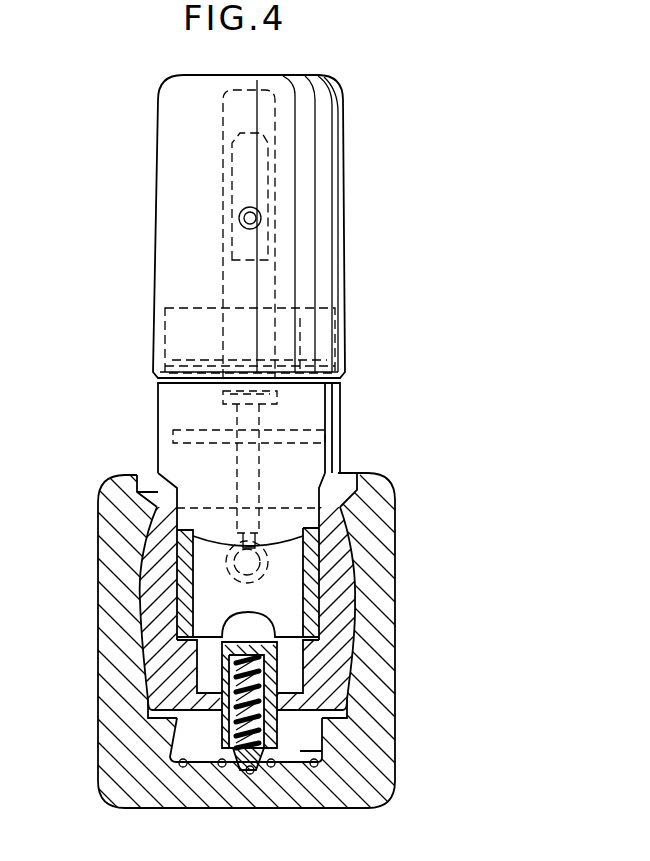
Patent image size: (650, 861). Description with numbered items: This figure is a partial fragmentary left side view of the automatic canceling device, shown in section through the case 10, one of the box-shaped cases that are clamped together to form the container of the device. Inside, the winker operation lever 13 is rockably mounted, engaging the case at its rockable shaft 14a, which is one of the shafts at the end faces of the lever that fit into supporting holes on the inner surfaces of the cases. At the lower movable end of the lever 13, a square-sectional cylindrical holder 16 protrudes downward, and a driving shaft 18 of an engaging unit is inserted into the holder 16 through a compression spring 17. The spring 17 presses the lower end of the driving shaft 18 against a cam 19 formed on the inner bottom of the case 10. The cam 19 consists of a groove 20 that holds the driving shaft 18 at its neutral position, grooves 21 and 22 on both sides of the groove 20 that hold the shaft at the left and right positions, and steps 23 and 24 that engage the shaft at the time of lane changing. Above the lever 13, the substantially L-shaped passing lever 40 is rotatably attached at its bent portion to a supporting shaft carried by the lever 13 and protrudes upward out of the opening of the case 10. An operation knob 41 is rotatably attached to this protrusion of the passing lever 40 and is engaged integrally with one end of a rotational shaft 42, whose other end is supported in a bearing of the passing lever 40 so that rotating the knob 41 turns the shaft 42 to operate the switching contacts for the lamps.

The case 10 is at (396, 678).
The winker operation lever 13 is at (353, 632).
The rockable shaft 14a is at (270, 566).
The square-sectional cylindrical holder 16 is at (222, 735).
The compression spring 17 is at (225, 668).
The driving shaft 18 is at (280, 749).
The cam 19 is at (308, 752).
The groove 20 is at (250, 775).
The groove 21 is at (182, 767).
The groove 22 is at (315, 767).
The step 23 is at (222, 767).
The step 24 is at (272, 767).
The passing lever 40 is at (344, 419).
The operation knob 41 is at (343, 133).
The rotational shaft 42 is at (267, 286).